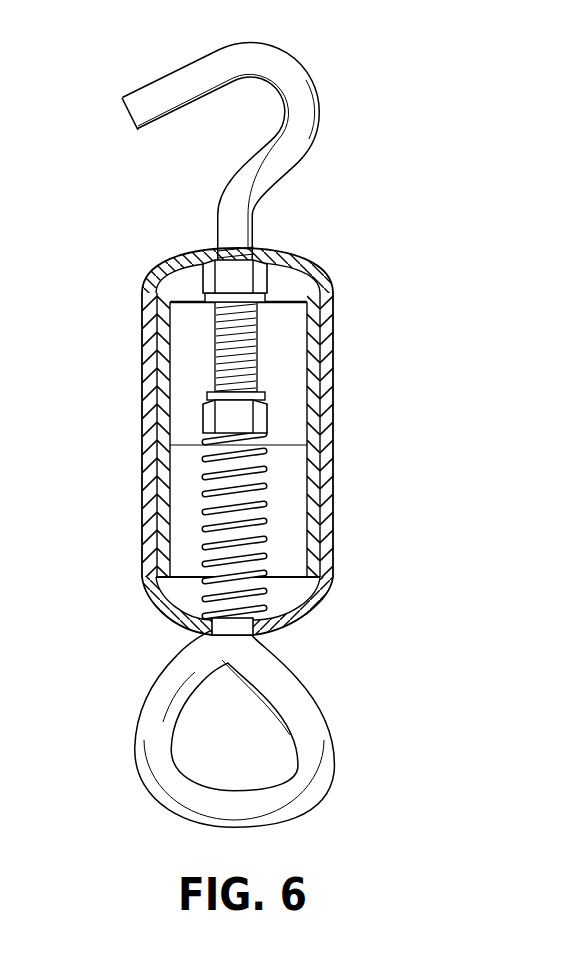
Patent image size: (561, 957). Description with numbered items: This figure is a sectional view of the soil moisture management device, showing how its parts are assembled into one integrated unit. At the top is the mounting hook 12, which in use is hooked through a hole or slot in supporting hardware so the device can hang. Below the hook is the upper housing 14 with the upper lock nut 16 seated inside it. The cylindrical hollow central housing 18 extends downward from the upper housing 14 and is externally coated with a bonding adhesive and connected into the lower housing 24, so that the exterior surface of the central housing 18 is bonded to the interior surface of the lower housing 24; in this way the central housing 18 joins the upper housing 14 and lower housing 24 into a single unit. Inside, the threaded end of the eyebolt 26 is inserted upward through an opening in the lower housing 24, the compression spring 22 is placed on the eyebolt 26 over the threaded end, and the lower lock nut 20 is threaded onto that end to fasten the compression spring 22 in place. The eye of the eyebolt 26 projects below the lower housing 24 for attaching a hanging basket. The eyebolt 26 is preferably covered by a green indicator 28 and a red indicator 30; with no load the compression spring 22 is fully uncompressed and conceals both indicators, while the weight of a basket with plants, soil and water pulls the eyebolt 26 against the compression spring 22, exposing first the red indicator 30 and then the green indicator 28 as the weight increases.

The mounting hook 12 is at (292, 102).
The upper housing 14 is at (242, 441).
The upper lock nut 16 is at (208, 277).
The cylindrical hollow central housing 18 is at (312, 403).
The lower lock nut 20 is at (210, 413).
The compression spring 22 is at (241, 459).
The lower housing 24 is at (142, 577).
The eyebolt 26 is at (307, 765).
The green indicator 28 is at (200, 530).
The red indicator 30 is at (232, 627).